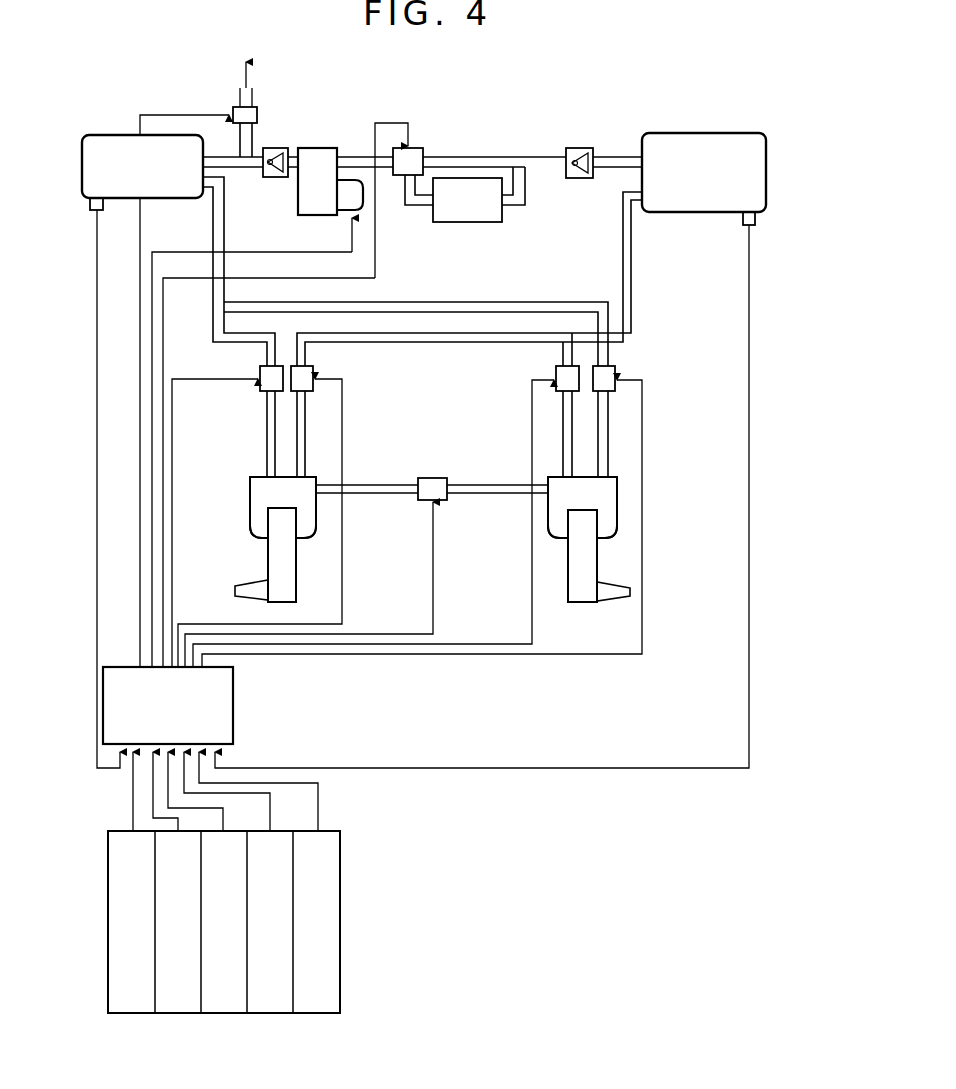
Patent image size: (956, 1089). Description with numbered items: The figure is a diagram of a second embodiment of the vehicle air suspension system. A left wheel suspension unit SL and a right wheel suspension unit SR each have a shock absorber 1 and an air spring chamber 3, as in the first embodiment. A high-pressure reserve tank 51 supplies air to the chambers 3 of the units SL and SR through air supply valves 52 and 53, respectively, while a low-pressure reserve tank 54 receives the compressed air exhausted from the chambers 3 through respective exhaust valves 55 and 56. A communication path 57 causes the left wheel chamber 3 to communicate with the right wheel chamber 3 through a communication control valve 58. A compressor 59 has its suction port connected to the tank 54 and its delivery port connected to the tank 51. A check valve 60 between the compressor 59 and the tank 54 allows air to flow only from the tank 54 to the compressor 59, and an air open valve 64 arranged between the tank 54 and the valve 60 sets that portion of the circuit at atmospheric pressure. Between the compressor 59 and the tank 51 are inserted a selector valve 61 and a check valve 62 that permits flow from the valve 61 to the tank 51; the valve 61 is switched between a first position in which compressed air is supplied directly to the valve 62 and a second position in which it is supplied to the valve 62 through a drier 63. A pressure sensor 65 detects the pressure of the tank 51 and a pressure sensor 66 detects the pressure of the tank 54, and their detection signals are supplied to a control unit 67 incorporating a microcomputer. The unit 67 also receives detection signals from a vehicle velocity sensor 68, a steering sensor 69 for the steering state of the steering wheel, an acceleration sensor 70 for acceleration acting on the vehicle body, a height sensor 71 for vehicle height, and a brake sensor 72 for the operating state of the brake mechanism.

The low-pressure reserve tank 54 is at (100, 135).
The pressure sensor 66 is at (100, 210).
The air open valve 64 is at (257, 113).
The check valve 60 is at (272, 177).
The compressor 59 is at (310, 148).
The selector valve 61 is at (417, 148).
The drier 63 is at (463, 222).
The check valve 62 is at (579, 148).
The high-pressure reserve tank 51 is at (697, 133).
The pressure sensor 65 is at (741, 224).
The exhaust valve 55 is at (260, 387).
The air supply valve 52 is at (313, 373).
The air supply valve 53 is at (556, 372).
The exhaust valve 56 is at (615, 373).
The communication path 57 is at (495, 485).
The communication control valve 58 is at (432, 478).
The left wheel suspension unit SL is at (250, 491).
The right wheel suspension unit SR is at (617, 492).
The air spring chamber 3 is at (258, 532).
The shock absorber 1 is at (296, 563).
The control unit 67 is at (233, 710).
The vehicle velocity sensor 68 is at (131, 1013).
The steering sensor 69 is at (180, 1013).
The acceleration sensor 70 is at (225, 1013).
The height sensor 71 is at (270, 1013).
The brake sensor 72 is at (318, 1013).